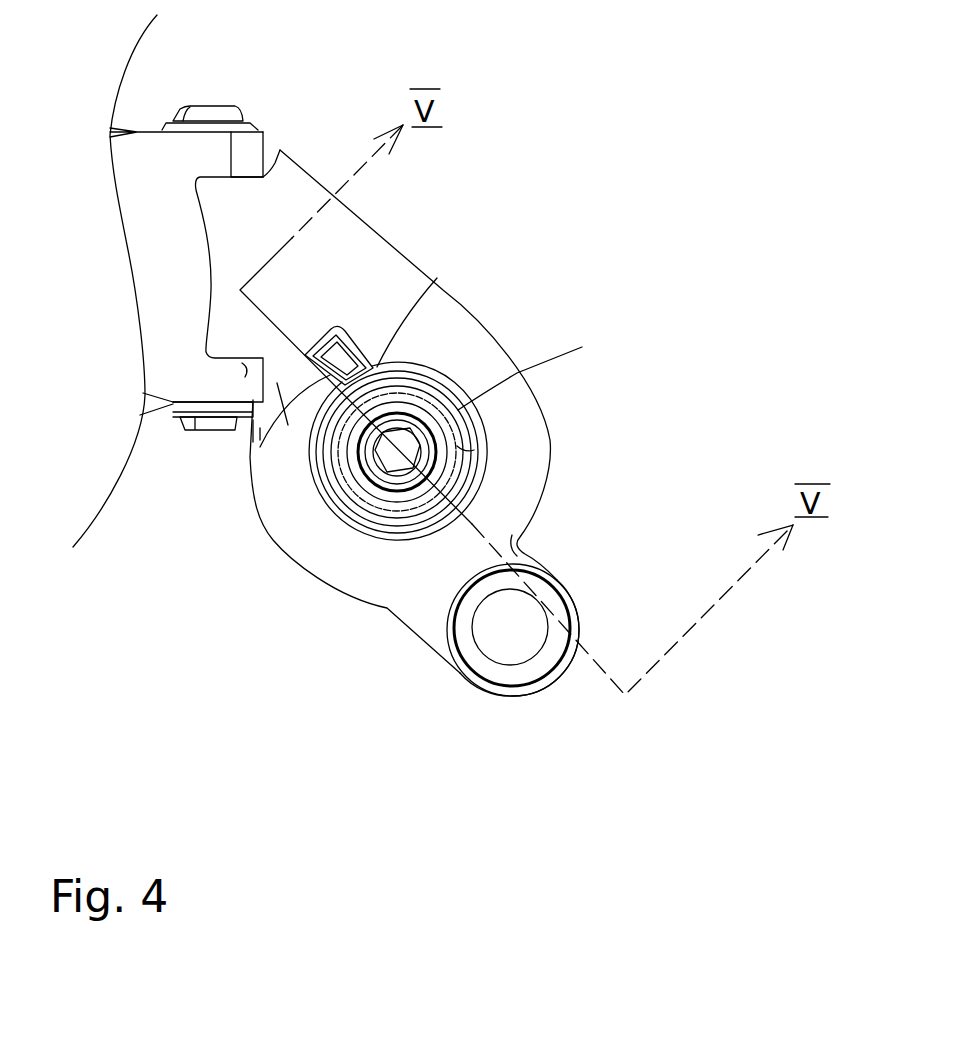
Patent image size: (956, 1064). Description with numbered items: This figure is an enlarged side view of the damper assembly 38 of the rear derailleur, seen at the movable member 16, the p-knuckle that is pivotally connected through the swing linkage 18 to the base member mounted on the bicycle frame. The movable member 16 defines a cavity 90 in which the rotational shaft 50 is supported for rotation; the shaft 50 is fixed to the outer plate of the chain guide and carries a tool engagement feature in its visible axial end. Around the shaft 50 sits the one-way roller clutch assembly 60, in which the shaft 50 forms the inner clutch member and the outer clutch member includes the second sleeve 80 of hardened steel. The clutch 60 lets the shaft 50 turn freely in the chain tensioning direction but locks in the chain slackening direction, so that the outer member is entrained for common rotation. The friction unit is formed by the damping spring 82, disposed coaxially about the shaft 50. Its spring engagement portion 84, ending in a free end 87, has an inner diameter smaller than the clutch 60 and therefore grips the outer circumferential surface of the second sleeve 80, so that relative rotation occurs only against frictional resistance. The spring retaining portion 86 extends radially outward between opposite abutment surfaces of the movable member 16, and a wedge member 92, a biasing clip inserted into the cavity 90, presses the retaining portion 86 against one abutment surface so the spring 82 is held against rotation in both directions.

The movable member 16 is at (300, 188).
The swing linkage 18 is at (140, 155).
The damper assembly 38 is at (381, 540).
The rotational shaft 50 is at (418, 420).
The one-way roller clutch assembly 60 is at (467, 432).
The second sleeve 80 is at (485, 447).
The damping spring 82 is at (470, 470).
The spring engagement portion 84 is at (427, 385).
The spring retaining portion 86 is at (252, 450).
The free end 87 is at (397, 357).
The cavity 90 is at (437, 278).
The wedge member 92 is at (350, 335).